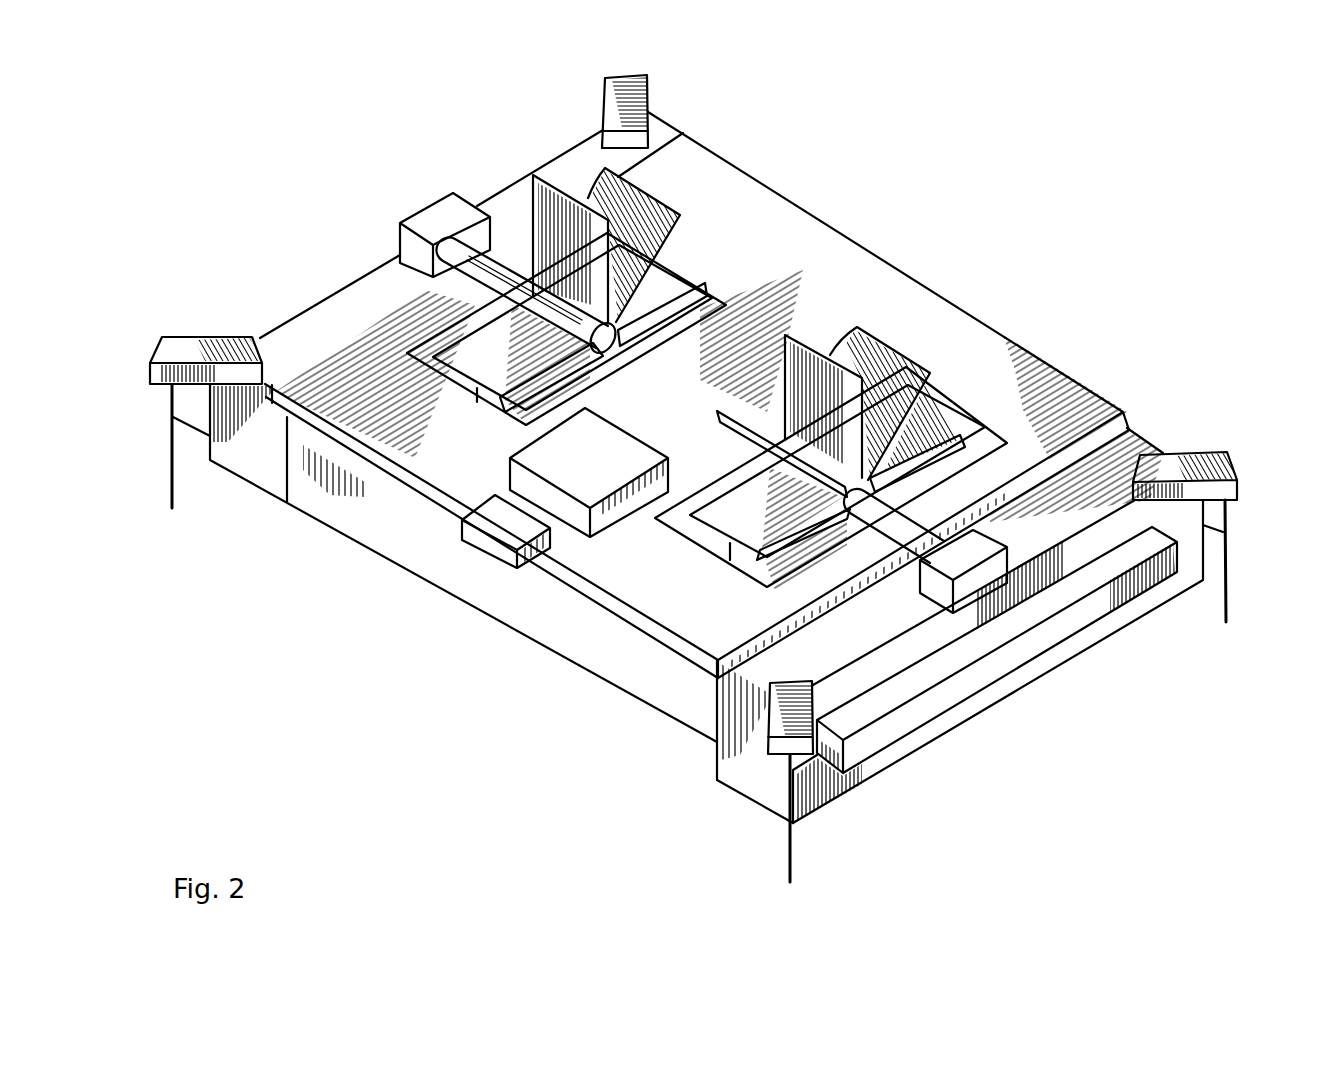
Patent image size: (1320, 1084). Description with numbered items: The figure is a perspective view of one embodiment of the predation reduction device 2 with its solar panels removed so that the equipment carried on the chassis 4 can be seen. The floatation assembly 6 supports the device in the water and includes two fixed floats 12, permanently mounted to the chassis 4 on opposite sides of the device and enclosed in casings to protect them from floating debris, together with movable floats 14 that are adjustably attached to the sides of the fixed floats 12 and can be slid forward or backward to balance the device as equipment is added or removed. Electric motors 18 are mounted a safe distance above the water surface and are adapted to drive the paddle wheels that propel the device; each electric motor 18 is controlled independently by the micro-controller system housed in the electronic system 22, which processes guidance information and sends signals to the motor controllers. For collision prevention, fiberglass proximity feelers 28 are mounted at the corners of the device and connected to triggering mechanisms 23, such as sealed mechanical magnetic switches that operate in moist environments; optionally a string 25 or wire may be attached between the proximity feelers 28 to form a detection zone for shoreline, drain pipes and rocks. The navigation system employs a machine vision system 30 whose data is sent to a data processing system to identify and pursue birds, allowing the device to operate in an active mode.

The predation reduction device 2 is at (356, 508).
The chassis 4 is at (655, 640).
The floatation assembly 6 is at (1060, 724).
The fixed float 12 is at (757, 802).
The movable float 14 is at (833, 752).
The electric motor 18 is at (441, 212).
The electronic system 22 is at (560, 457).
The triggering mechanism 23 is at (648, 97).
The string 25 is at (565, 605).
The proximity feeler 28 is at (167, 467).
The machine vision system 30 is at (487, 548).